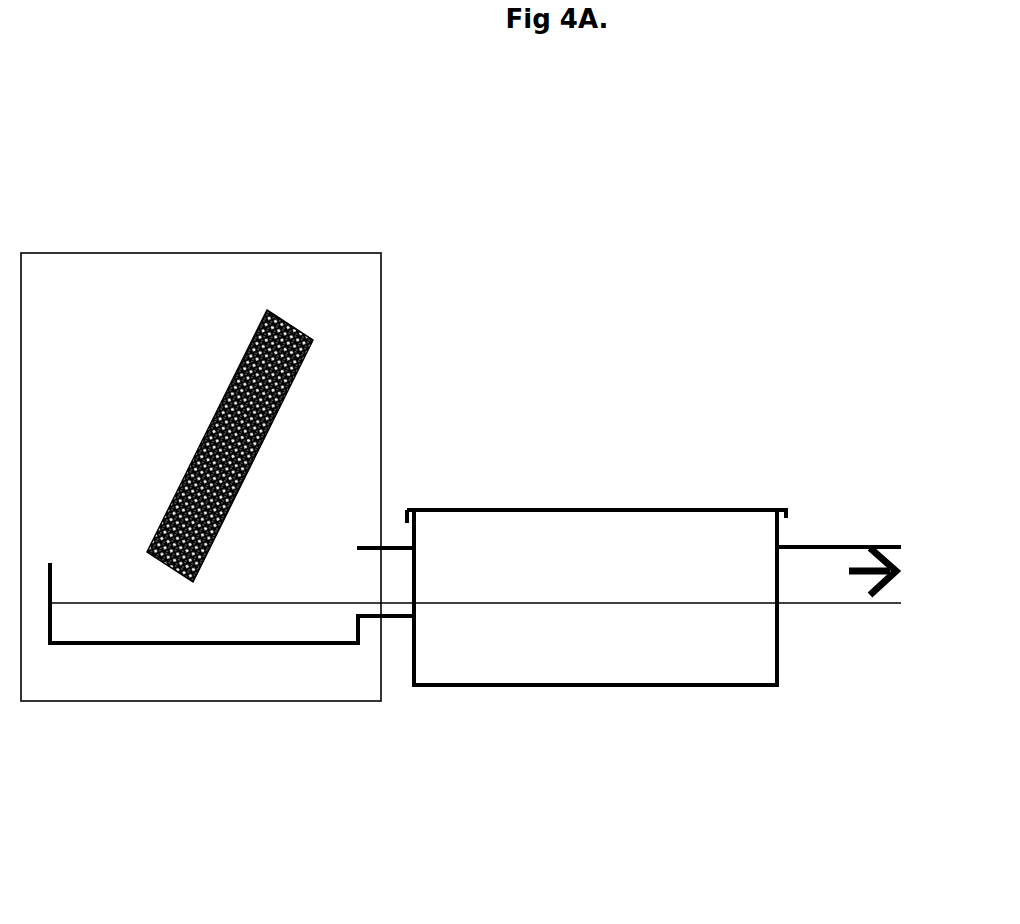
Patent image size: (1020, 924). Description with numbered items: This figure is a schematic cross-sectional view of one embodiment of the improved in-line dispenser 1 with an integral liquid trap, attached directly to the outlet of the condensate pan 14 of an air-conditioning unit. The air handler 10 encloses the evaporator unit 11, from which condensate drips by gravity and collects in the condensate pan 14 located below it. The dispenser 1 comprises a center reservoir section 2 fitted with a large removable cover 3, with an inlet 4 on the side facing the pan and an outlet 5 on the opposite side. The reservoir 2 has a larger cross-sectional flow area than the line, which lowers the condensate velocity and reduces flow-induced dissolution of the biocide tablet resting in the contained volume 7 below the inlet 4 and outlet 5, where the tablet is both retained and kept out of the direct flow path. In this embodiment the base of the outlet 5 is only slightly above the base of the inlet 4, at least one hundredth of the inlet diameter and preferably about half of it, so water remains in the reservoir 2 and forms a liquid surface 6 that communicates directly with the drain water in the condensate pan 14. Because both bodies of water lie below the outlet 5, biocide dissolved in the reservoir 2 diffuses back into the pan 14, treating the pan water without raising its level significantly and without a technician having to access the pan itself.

The in-line dispenser 1 is at (593, 268).
The center reservoir section 2 is at (488, 550).
The large removable cover 3 is at (586, 508).
The inlet 4 is at (401, 525).
The outlet 5 is at (792, 546).
The liquid surface 6 is at (668, 603).
The contained volume 7 is at (777, 668).
The air handler 10 is at (281, 250).
The evaporator unit 11 is at (222, 387).
The condensate pan 14 is at (103, 643).